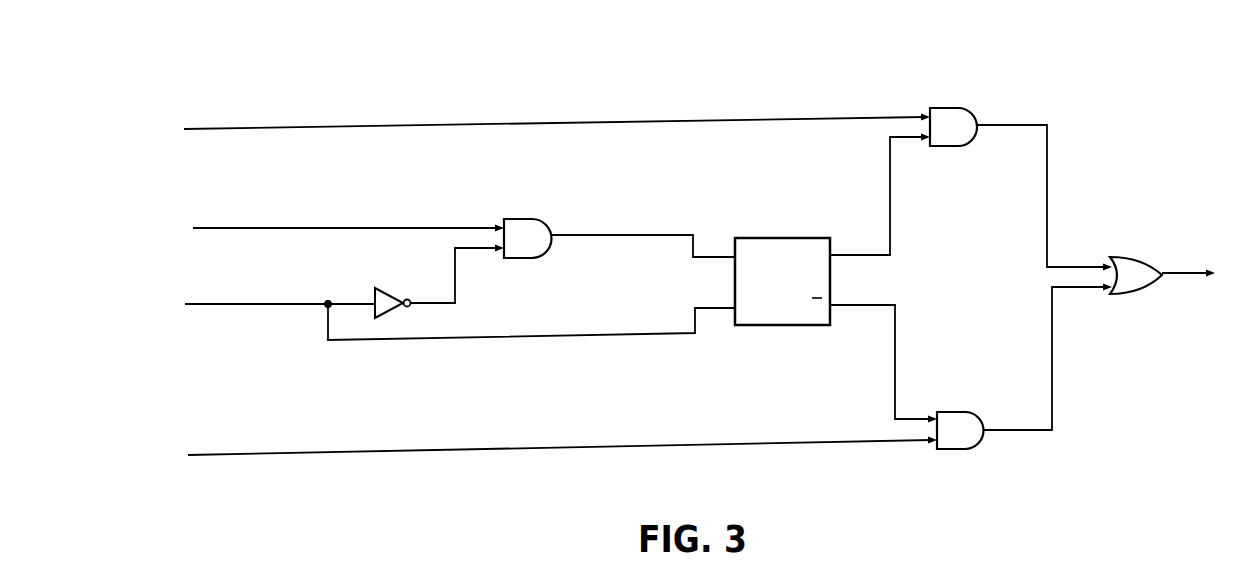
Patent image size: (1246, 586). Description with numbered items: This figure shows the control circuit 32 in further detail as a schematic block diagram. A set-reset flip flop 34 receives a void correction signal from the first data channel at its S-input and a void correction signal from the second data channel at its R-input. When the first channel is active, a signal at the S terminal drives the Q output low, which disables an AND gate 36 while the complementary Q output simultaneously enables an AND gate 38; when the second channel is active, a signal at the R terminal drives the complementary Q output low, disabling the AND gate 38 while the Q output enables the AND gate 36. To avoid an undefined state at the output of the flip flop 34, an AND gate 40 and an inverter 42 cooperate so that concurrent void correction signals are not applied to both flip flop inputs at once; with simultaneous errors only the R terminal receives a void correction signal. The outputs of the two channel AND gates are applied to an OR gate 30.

The OR gate 30 is at (1123, 260).
The control circuit 32 is at (1037, 95).
The set-reset flip flop 34 is at (770, 242).
The AND gate 36 is at (940, 108).
The AND gate 38 is at (949, 412).
The AND gate 40 is at (525, 219).
The inverter 42 is at (383, 288).